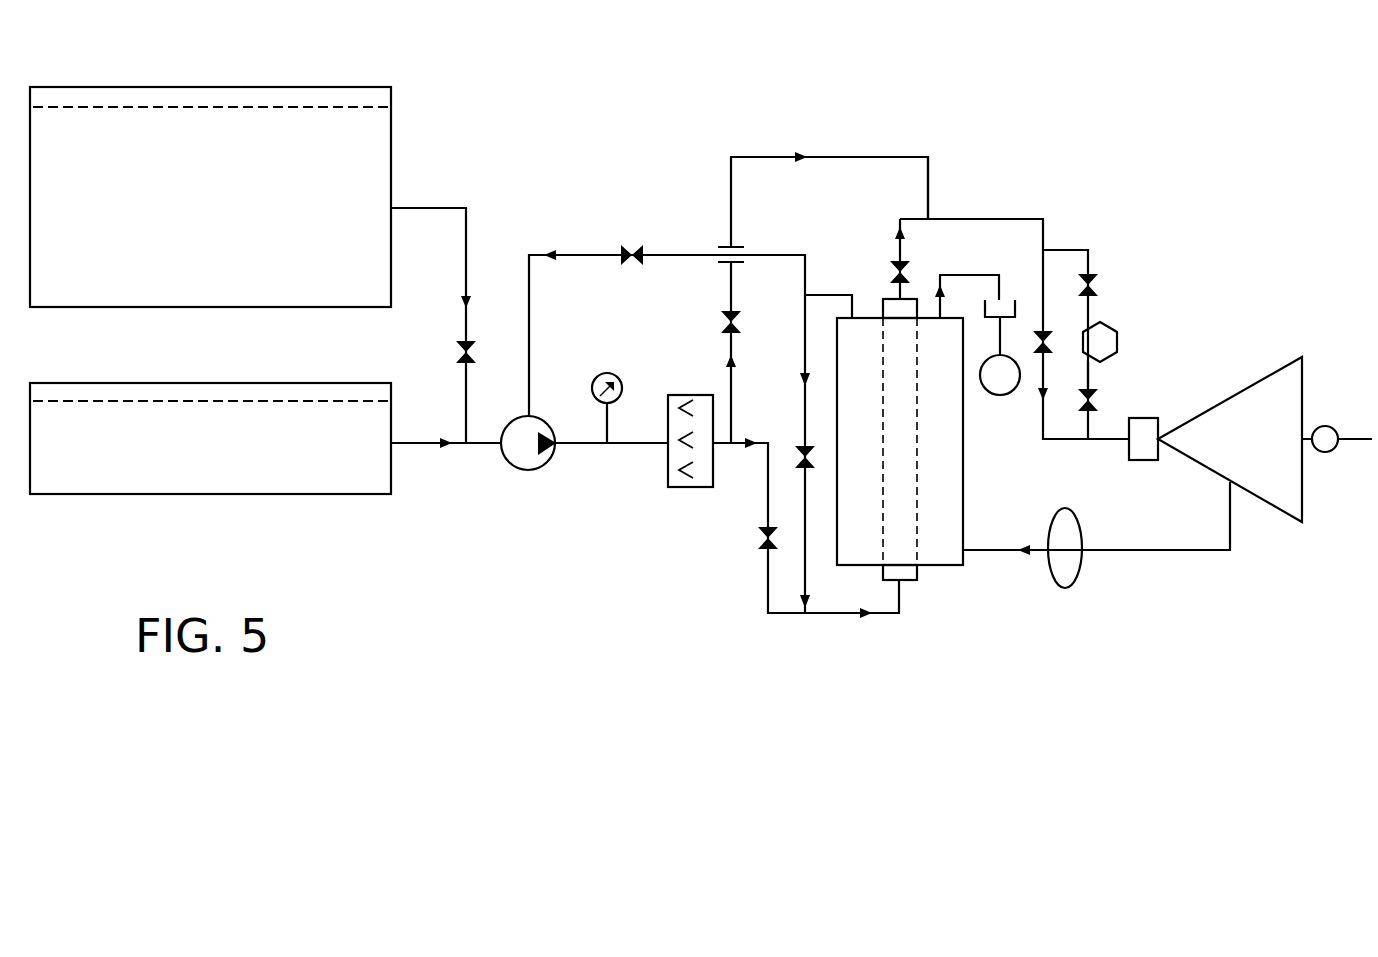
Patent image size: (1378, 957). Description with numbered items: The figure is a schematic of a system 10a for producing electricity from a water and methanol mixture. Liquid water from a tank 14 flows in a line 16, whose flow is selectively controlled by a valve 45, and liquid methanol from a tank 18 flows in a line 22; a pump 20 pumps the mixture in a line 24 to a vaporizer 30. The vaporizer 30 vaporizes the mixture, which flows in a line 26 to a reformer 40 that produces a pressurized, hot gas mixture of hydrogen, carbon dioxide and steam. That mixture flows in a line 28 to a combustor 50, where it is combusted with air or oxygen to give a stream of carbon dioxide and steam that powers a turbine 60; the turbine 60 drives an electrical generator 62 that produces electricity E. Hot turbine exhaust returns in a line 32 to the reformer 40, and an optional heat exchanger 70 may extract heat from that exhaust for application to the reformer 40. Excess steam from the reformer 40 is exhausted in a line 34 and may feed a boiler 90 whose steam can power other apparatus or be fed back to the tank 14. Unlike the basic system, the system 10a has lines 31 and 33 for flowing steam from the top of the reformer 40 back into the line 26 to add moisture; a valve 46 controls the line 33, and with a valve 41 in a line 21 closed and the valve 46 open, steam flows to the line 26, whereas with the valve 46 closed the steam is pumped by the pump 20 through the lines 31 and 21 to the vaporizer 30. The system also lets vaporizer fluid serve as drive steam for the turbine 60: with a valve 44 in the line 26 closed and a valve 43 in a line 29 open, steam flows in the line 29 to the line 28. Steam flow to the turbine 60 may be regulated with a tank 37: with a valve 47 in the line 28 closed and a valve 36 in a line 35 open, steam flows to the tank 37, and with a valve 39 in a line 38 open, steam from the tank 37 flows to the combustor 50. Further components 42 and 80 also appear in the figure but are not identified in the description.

The system 10a is at (682, 148).
The tank 14 is at (391, 143).
The line 16 is at (470, 242).
The tank 18 is at (391, 410).
The pump 20 is at (517, 470).
The line 21 is at (572, 254).
The line 22 is at (420, 446).
The line 24 is at (625, 446).
The line 26 is at (768, 614).
The line 28 is at (948, 218).
The line 29 is at (840, 156).
The vaporizer 30 is at (682, 488).
The line 31 is at (823, 293).
The line 32 is at (1170, 551).
The line 33 is at (805, 352).
The line 34 is at (967, 275).
The line 35 is at (1080, 250).
The valve 36 is at (1096, 280).
The tank 37 is at (1110, 330).
The line 38 is at (1088, 375).
The valve 39 is at (1095, 400).
The reformer 40 is at (835, 335).
The valve 41 is at (634, 247).
The valve 42 is at (892, 272).
The valve 43 is at (722, 322).
The valve 44 is at (758, 538).
The valve 45 is at (476, 352).
The valve 46 is at (800, 452).
The valve 47 is at (1048, 331).
The combustor 50 is at (1143, 458).
The turbine 60 is at (1265, 375).
The electrical generator 62 is at (1325, 452).
The heat exchanger 70 is at (1065, 590).
The pressure gauge 80 is at (605, 373).
The boiler 90 is at (1000, 396).
The electricity E is at (1360, 437).